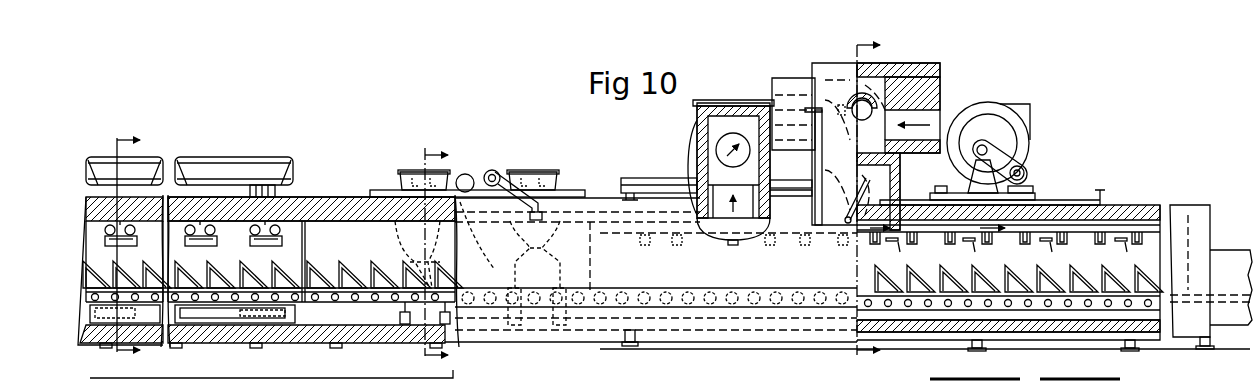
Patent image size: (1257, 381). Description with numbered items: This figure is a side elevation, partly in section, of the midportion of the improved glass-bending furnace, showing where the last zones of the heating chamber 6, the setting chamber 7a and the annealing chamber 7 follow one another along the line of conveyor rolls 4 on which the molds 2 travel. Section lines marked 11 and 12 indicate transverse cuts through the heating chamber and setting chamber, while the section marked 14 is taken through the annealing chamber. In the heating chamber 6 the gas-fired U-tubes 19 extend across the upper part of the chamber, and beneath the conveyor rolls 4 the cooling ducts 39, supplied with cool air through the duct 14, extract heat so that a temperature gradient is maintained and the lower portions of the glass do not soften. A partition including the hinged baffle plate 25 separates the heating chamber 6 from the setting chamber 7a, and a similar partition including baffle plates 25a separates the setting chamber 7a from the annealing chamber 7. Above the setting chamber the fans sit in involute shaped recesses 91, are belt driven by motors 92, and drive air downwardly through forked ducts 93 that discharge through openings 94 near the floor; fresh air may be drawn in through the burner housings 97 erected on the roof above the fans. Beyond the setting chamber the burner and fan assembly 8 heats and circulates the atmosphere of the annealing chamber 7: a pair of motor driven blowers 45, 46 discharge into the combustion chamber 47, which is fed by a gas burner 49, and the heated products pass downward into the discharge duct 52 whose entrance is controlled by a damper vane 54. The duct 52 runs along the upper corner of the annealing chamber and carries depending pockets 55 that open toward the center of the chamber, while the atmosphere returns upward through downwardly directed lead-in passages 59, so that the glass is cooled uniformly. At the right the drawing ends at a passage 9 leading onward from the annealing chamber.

The molds 2 is at (343, 270).
The conveyor rolls 4 is at (356, 299).
The heating chamber 6 is at (276, 228).
The annealing chamber 7 is at (640, 215).
The setting chamber 7a is at (495, 214).
The burner and fan assembly 8 is at (790, 88).
The exit passage 9 is at (1220, 262).
The section line 11 is at (131, 248).
The section line 12 is at (421, 255).
The duct 14 is at (226, 168).
The U-tubes 19 is at (252, 232).
The side baffle plate 25 is at (306, 242).
The baffle plates 25a is at (596, 255).
The cooling ducts 39 is at (212, 318).
The motor driven blower 45 is at (692, 140).
The motor driven blower 46 is at (1016, 137).
The combustion chamber 47 is at (883, 122).
The gas burner 49 is at (846, 113).
The discharge duct 52 is at (899, 233).
The damper vane 54 is at (840, 228).
The depending pockets 55 is at (945, 238).
The lead-in passages 59 is at (1046, 243).
The involute shaped recesses 91 is at (395, 190).
The motors 92 is at (490, 175).
The ducts 93 is at (414, 250).
The openings 94 is at (402, 316).
The burner housings 97 is at (412, 172).